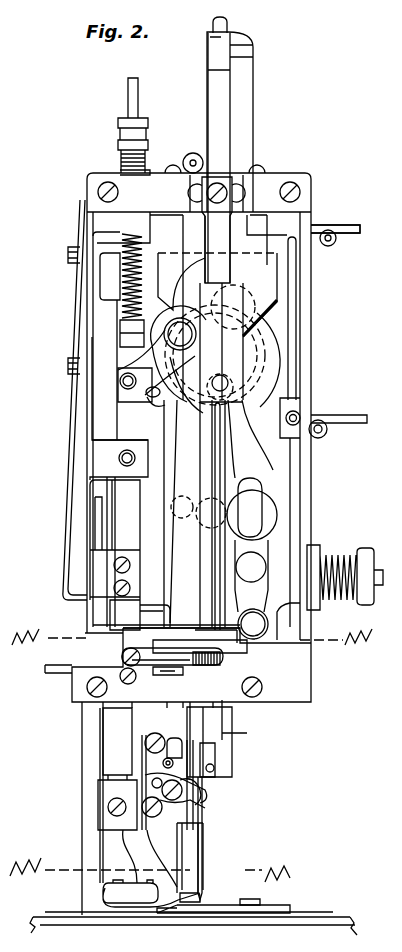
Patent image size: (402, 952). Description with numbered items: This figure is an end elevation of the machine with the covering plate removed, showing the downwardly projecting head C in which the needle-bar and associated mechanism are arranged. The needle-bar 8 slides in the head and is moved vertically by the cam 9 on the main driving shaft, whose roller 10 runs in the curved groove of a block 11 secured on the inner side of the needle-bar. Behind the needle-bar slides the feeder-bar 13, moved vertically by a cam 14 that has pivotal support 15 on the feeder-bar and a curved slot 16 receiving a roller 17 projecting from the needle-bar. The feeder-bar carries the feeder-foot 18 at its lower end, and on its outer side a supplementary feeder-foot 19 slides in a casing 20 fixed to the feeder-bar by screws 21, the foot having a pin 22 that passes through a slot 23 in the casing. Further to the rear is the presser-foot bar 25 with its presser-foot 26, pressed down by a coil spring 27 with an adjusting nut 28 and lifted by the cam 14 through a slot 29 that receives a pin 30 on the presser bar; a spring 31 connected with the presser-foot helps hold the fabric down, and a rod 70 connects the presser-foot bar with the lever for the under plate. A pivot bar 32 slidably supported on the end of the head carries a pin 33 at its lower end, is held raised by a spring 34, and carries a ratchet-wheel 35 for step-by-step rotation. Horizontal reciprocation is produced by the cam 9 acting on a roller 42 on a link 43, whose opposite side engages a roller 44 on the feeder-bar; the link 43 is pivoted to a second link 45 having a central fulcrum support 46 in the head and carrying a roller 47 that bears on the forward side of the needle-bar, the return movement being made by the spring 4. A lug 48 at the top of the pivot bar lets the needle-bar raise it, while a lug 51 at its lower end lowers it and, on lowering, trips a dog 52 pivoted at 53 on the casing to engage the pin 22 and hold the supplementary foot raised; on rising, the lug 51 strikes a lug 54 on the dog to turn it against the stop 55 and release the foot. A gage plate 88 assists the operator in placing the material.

The spring 4 is at (68, 553).
The needle-bar 8 is at (240, 113).
The cam 9 is at (268, 337).
The roller 10 is at (283, 278).
The block 11 is at (283, 296).
The feeder-bar 13 is at (174, 513).
The cam 14 is at (247, 465).
The pivotal support 15 is at (170, 333).
The curved slot 16 is at (257, 507).
The roller 17 is at (242, 401).
The feeder-foot 18 is at (193, 893).
The supplementary feeder-foot 19 is at (206, 908).
The casing 20 is at (155, 757).
The screws 21 is at (145, 735).
The pin 22 is at (150, 765).
The slot 23 is at (151, 731).
The presser-foot bar 25 is at (127, 503).
The presser-foot 26 is at (247, 905).
The coil spring 27 is at (123, 252).
The adjusting nut 28 is at (125, 122).
The slot 29 is at (137, 370).
The pin 30 is at (125, 381).
The spring 31 is at (258, 668).
The bar 32 is at (223, 90).
The pin 33 is at (205, 830).
The spring 34 is at (217, 240).
The ratchet-wheel 35 is at (206, 676).
The roller 42 is at (150, 396).
The link 43 is at (87, 443).
The roller 44 is at (172, 510).
The second link 45 is at (253, 615).
The fulcrum support 46 is at (250, 558).
The roller 47 is at (260, 633).
The lug 48 is at (210, 35).
The lug 51 is at (217, 760).
The dog 52 is at (147, 795).
The pivotal support 53 is at (206, 802).
The lug 54 is at (208, 785).
The stop 55 is at (150, 787).
The rod 70 is at (82, 890).
The gage plate 88 is at (310, 915).
The head C is at (311, 395).